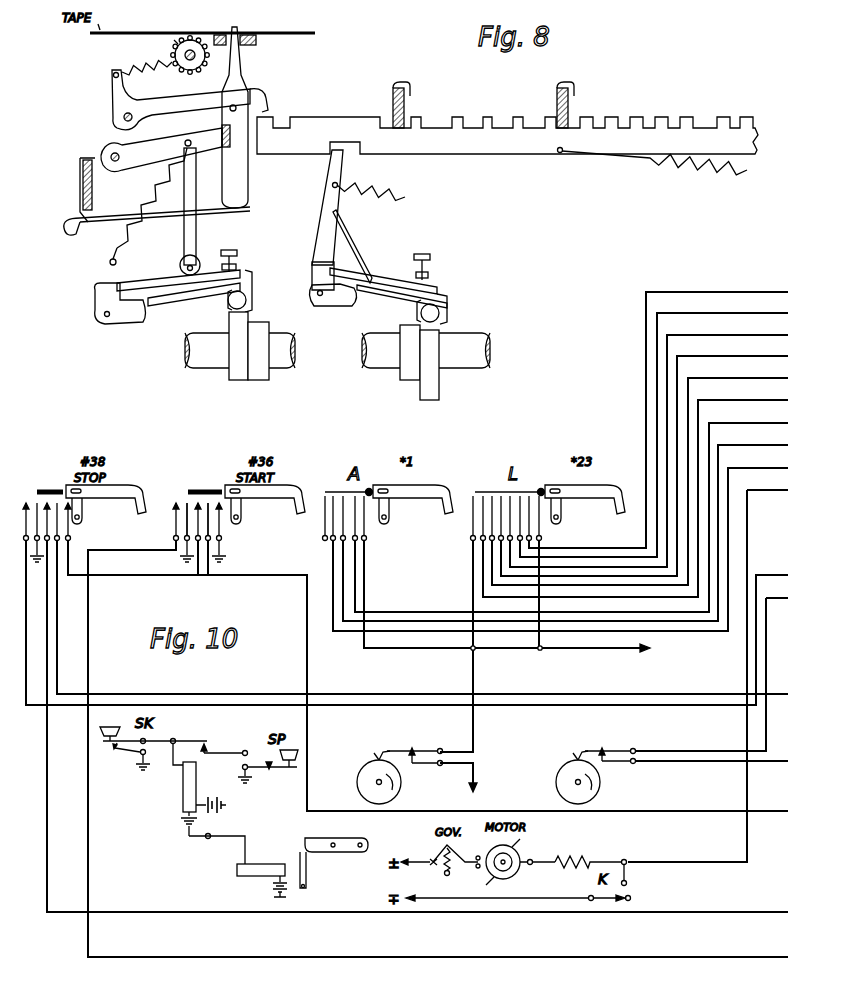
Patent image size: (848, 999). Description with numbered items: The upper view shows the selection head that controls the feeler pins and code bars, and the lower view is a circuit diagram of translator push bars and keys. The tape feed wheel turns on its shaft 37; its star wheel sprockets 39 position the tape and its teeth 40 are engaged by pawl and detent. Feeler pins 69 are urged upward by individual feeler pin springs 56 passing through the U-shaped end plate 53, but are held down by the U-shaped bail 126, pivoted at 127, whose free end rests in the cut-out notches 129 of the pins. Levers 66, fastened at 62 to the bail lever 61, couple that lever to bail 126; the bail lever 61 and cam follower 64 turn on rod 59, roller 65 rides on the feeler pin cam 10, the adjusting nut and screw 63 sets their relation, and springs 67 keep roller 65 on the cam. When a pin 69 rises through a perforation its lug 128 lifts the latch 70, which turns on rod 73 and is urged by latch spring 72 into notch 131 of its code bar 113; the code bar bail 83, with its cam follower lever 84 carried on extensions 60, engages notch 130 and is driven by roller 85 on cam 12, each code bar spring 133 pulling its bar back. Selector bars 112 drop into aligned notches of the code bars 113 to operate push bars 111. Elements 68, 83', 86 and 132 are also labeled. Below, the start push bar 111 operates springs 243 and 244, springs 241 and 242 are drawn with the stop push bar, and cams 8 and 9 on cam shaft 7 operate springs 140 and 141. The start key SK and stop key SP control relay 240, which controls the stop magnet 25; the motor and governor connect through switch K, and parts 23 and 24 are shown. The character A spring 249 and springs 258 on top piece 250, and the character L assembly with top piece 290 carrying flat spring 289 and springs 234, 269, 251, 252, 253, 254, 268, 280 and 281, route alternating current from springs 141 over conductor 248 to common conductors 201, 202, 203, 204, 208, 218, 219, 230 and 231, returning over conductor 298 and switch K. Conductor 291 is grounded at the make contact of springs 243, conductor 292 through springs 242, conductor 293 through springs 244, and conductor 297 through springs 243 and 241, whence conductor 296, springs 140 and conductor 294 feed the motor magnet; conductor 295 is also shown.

In FIG. 8, the cam shaft 7 is at (205, 352).
In FIG. 8, the feeler pin cam 10 is at (236, 370).
In FIG. 8, the cam 12 is at (418, 390).
In FIG. 8, the shaft 37 is at (184, 53).
In FIG. 8, the star wheel sprockets 39 is at (190, 32).
In FIG. 8, the teeth 40 is at (176, 40).
In FIG. 8, the U-shaped end plate 53 is at (82, 165).
In FIG. 8, the feeler pin springs 56 is at (63, 230).
In FIG. 8, the rod 59 is at (104, 314).
In FIG. 8, the extensions 60 is at (321, 298).
In FIG. 8, the bail lever 61 is at (157, 282).
In FIG. 8, the pivot connection 62 is at (182, 260).
In FIG. 8, the adjusting nut and screw 63 is at (238, 264).
In FIG. 8, the cam follower 64 is at (190, 298).
In FIG. 8, the roller 65 is at (247, 304).
In FIG. 8, the levers 66 is at (196, 225).
In FIG. 8, the springs 67 is at (142, 203).
In FIG. 8, the spring hook 68 is at (110, 262).
In FIG. 8, the feeler pins 69 is at (236, 30).
In FIG. 8, the latches 70 is at (112, 85).
In FIG. 8, the latch springs 72 is at (130, 70).
In FIG. 8, the rod 73 is at (124, 117).
In FIG. 8, the code bar bail 83 is at (342, 250).
In FIG. 8, the spring 83' is at (369, 183).
In FIG. 8, the cam follower lever 84 is at (390, 297).
In FIG. 8, the roller 85 is at (440, 313).
In FIG. 8, the adjusting screw 86 is at (431, 270).
In FIG. 8, the push bars 111 is at (393, 94).
In FIG. 10, the push bars 111 is at (138, 488).
In FIG. 8, the selector bars 112 is at (405, 93).
In FIG. 8, the code bars 113 is at (460, 128).
In FIG. 8, the U-shaped bail 126 is at (160, 142).
In FIG. 8, the pivot 127 is at (115, 162).
In FIG. 8, the lugs 128 is at (236, 106).
In FIG. 8, the cut-out notches 129 is at (230, 135).
In FIG. 8, the notch 130 is at (334, 162).
In FIG. 8, the notch 131 is at (277, 118).
In FIG. 8, the rack 132 is at (592, 118).
In FIG. 8, the spring 133 is at (716, 172).
In FIG. 10, the cam 8 is at (556, 785).
In FIG. 10, the cam 9 is at (357, 785).
In FIG. 10, the lever 23 is at (352, 843).
In FIG. 10, the arm 24 is at (306, 868).
In FIG. 10, the stop magnet 25 is at (255, 863).
In FIG. 10, the springs 140 is at (608, 752).
In FIG. 10, the springs 141 is at (428, 745).
In FIG. 10, the common conductor 201 is at (658, 412).
In FIG. 10, the common conductor 202 is at (654, 427).
In FIG. 10, the common conductor 203 is at (649, 443).
In FIG. 10, the common conductor 204 is at (644, 458).
In FIG. 10, the conductor 208 is at (640, 473).
In FIG. 10, the common conductor 218 is at (635, 490).
In FIG. 10, the common conductor 219 is at (571, 509).
In FIG. 10, the common conductor 230 is at (565, 525).
In FIG. 10, the common conductor 231 is at (560, 541).
In FIG. 10, the spring 234 is at (483, 522).
In FIG. 10, the relay 240 is at (183, 791).
In FIG. 10, the springs 241 is at (70, 520).
In FIG. 10, the springs 242 is at (38, 491).
In FIG. 10, the springs 243 is at (185, 537).
In FIG. 10, the springs 244 is at (213, 512).
In FIG. 10, the conductor 248 is at (462, 672).
In FIG. 10, the spring 249 is at (366, 515).
In FIG. 10, the top piece 250 is at (333, 490).
In FIG. 10, the spring 251 is at (529, 532).
In FIG. 10, the spring 252 is at (539, 538).
In FIG. 10, the spring 253 is at (483, 555).
In FIG. 10, the contact 254 is at (520, 546).
In FIG. 10, the springs 258 is at (366, 542).
In FIG. 10, the contact 268 is at (510, 538).
In FIG. 10, the spring 269 is at (501, 528).
In FIG. 10, the contact 280 is at (343, 532).
In FIG. 10, the contact 281 is at (333, 520).
In FIG. 10, the flat spring 289 is at (551, 525).
In FIG. 10, the top piece 290 is at (497, 490).
In FIG. 10, the conductor 291 is at (438, 748).
In FIG. 10, the conductor 292 is at (417, 726).
In FIG. 10, the conductor 293 is at (428, 675).
In FIG. 10, the conductor 294 is at (712, 752).
In FIG. 10, the conductor 295 is at (422, 617).
In FIG. 10, the conductor 296 is at (712, 666).
In FIG. 10, the conductor 297 is at (407, 622).
In FIG. 10, the conductor 298 is at (708, 668).